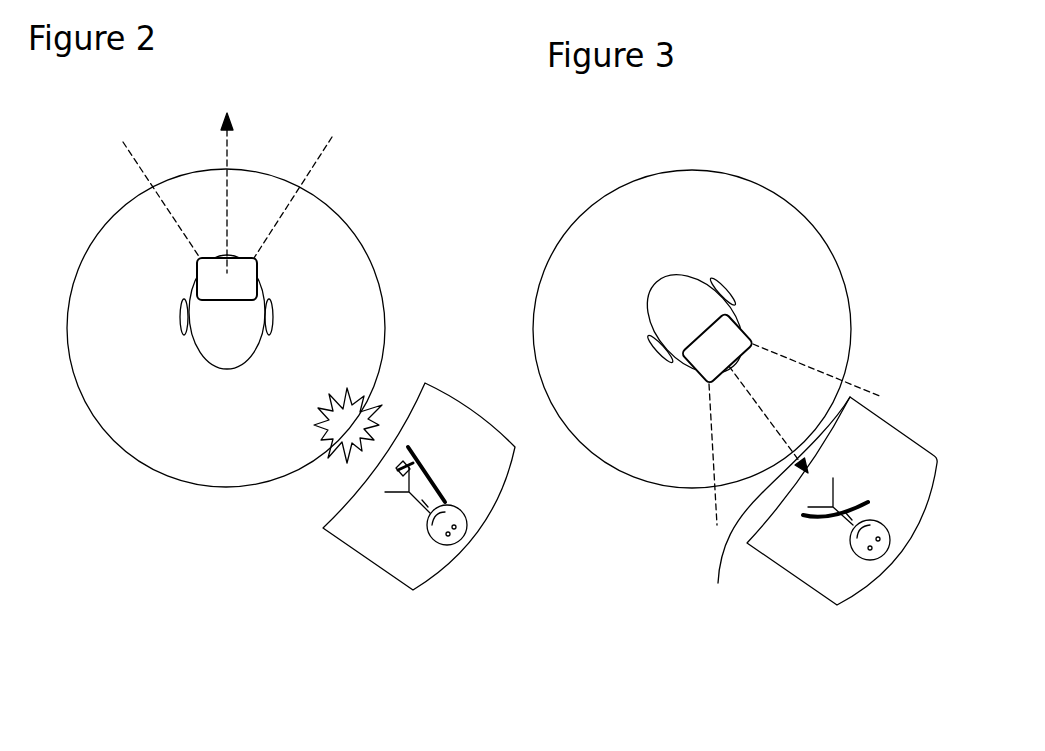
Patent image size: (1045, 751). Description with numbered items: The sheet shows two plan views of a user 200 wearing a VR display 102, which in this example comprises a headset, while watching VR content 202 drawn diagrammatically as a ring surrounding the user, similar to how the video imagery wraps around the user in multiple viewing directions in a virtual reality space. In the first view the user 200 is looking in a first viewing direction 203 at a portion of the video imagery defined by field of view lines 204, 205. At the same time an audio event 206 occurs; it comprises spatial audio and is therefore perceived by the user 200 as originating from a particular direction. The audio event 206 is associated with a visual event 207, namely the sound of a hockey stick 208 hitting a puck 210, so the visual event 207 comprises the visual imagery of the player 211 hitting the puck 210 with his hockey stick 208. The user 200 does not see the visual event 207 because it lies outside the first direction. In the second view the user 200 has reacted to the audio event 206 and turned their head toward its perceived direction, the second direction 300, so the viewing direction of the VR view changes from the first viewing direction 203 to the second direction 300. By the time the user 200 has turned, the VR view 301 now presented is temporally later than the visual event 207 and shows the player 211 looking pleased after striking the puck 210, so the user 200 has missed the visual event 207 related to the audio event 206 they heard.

In FIG. 2, the VR display 102 is at (217, 268).
In FIG. 3, the VR display 102 is at (733, 340).
In FIG. 2, the user 200 is at (217, 347).
In FIG. 3, the user 200 is at (688, 303).
In FIG. 2, the VR content 202 is at (367, 250).
In FIG. 2, the first viewing direction 203 is at (230, 148).
In FIG. 2, the field of view line 204 is at (140, 167).
In FIG. 3, the field of view line 204 is at (853, 385).
In FIG. 2, the field of view line 205 is at (322, 150).
In FIG. 3, the field of view line 205 is at (715, 502).
In FIG. 2, the audio event 206 is at (350, 423).
In FIG. 2, the visual event 207 is at (363, 560).
In FIG. 2, the hockey stick 208 is at (420, 480).
In FIG. 2, the puck 210 is at (413, 468).
In FIG. 2, the player 211 is at (447, 545).
In FIG. 3, the player 211 is at (873, 560).
In FIG. 3, the second direction 300 is at (775, 510).
In FIG. 3, the VR view 301 is at (910, 437).